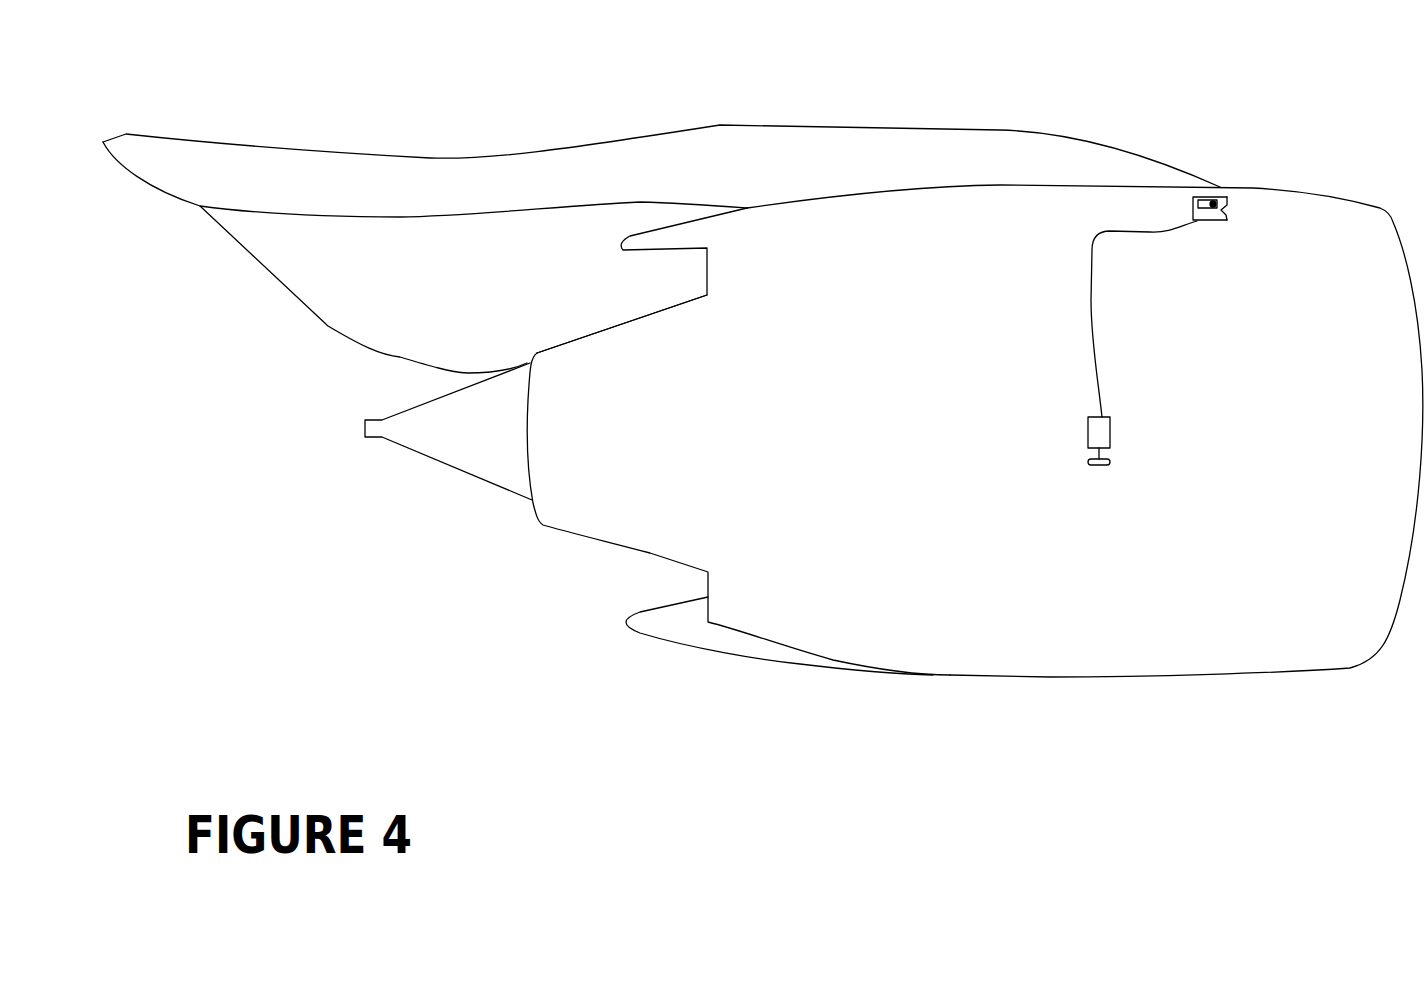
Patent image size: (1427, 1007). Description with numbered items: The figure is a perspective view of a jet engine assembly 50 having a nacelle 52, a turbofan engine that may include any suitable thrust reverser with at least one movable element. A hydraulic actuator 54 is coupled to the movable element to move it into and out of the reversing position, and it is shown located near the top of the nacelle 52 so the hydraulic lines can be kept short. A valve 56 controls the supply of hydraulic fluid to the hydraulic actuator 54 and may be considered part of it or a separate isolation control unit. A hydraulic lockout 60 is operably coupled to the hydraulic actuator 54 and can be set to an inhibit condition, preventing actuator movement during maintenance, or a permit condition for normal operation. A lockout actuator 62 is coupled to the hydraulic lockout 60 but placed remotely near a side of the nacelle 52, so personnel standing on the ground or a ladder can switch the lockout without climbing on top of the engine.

The jet engine assembly 50 is at (600, 567).
The nacelle 52 is at (923, 238).
The hydraulic actuator 54 is at (1227, 213).
The valve 56 is at (1220, 197).
The hydraulic lockout 60 is at (1193, 205).
The lockout actuator 62 is at (1092, 467).